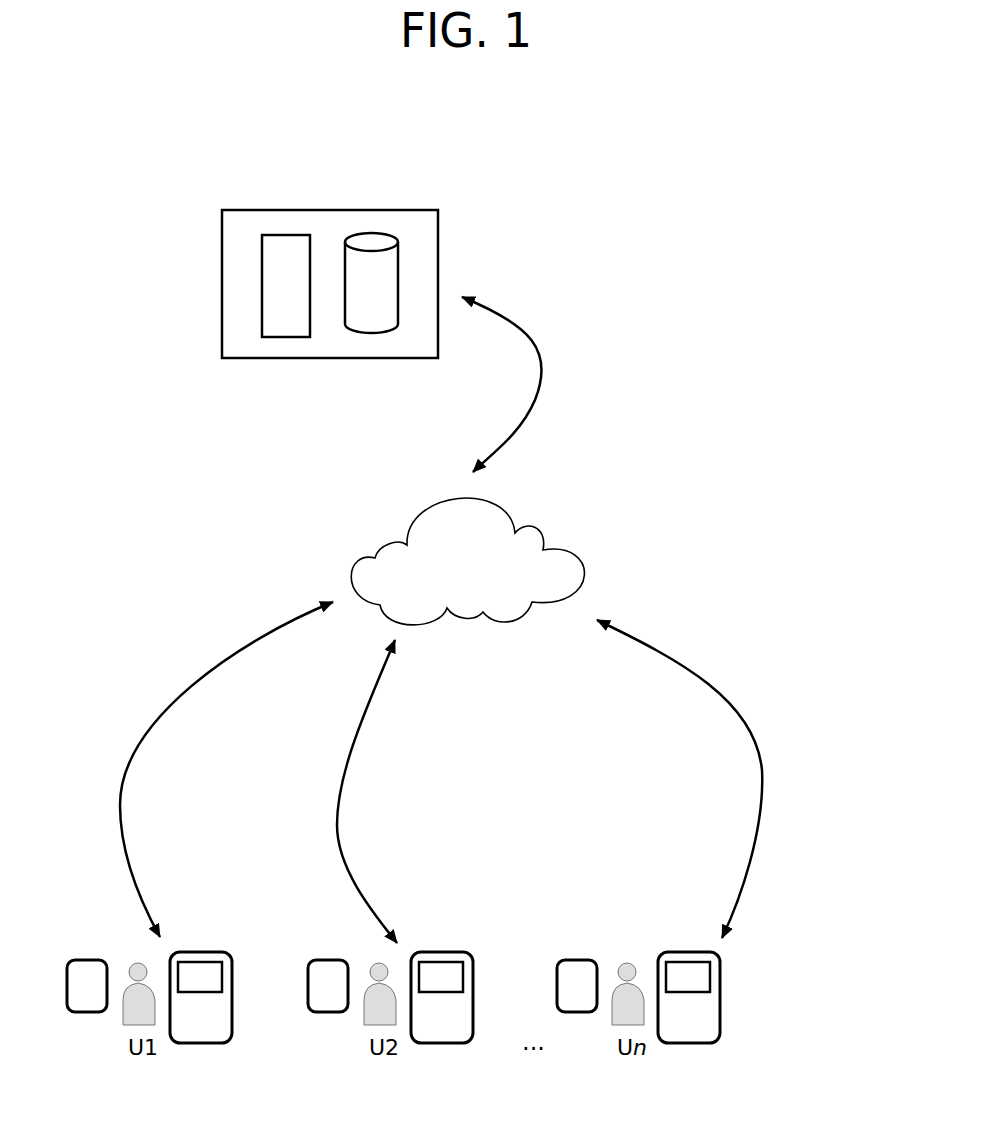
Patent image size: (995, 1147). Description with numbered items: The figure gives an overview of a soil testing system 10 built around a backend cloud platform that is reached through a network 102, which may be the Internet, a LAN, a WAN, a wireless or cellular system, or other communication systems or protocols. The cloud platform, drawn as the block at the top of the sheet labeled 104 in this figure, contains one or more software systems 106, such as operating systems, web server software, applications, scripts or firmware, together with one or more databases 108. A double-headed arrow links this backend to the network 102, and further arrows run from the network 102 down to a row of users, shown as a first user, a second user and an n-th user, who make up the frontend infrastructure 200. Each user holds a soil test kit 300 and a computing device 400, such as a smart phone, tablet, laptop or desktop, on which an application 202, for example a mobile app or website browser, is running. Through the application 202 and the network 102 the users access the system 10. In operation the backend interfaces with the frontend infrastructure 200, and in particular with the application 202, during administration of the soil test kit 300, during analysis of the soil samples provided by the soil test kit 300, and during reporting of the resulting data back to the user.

The soil testing system 10 is at (607, 117).
The network 102 is at (486, 575).
The server 104 is at (340, 207).
The software systems 106 is at (262, 273).
The databases 108 is at (375, 312).
The frontend infrastructure 200 is at (245, 990).
The application 202 is at (195, 977).
The soil test kit 300 is at (87, 960).
The computing devices 400 is at (220, 1027).